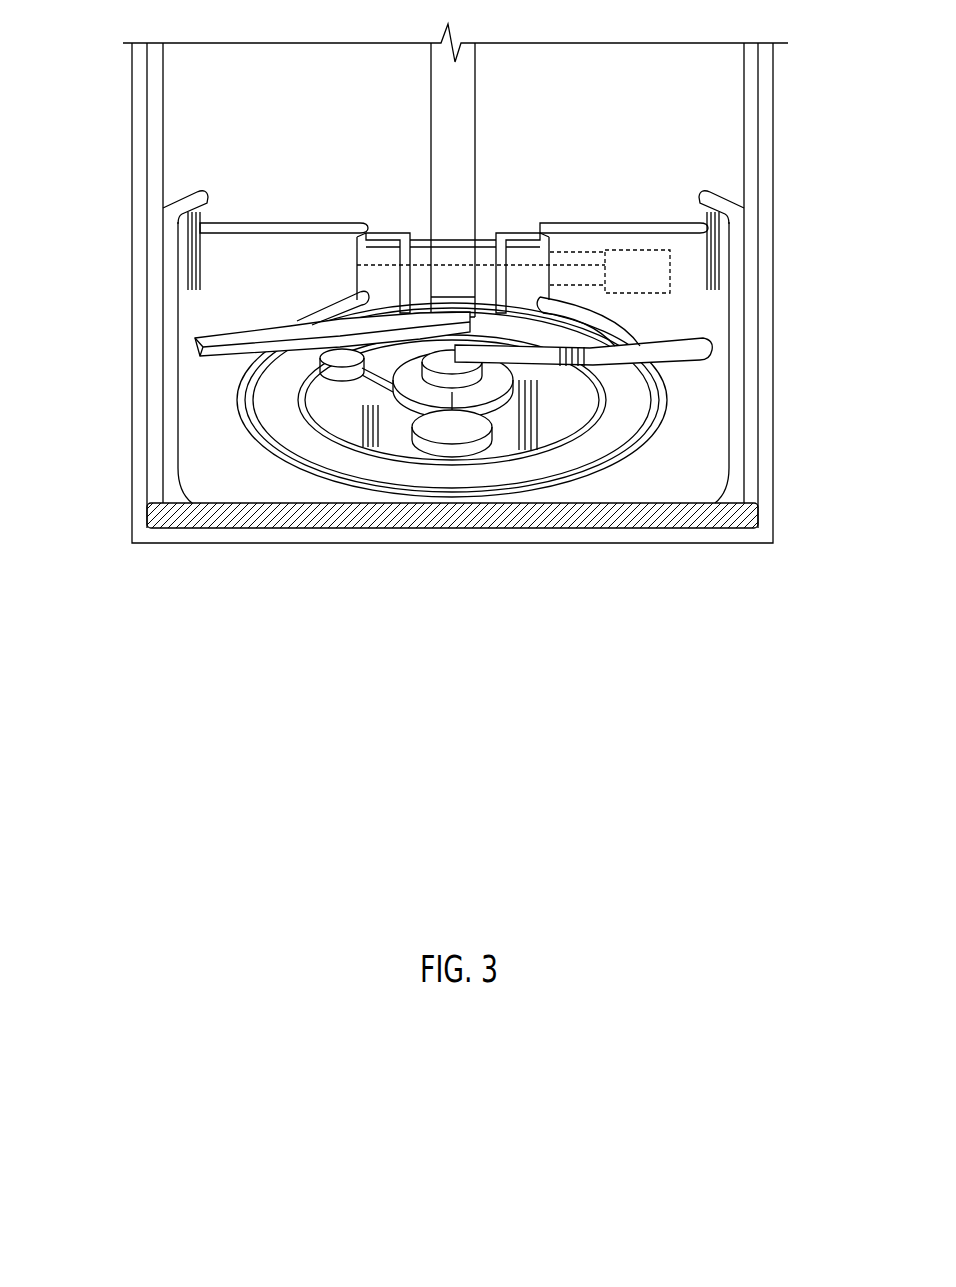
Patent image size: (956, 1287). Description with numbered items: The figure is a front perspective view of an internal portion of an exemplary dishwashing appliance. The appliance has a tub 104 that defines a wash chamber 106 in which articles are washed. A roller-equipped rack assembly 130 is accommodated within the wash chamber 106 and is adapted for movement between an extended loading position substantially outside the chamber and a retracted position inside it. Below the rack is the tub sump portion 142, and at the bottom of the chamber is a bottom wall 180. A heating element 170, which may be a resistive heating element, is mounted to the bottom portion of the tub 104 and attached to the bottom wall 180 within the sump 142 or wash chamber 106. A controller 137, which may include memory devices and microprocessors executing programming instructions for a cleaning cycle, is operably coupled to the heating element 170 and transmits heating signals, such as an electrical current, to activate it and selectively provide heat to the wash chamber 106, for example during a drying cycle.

The tub 104 is at (725, 84).
The wash chamber 106 is at (194, 127).
The rack assembly 130 is at (712, 342).
The controller 137 is at (630, 248).
The tub sump portion 142 is at (715, 420).
The heating element 170 is at (290, 452).
The bottom wall 180 is at (676, 485).